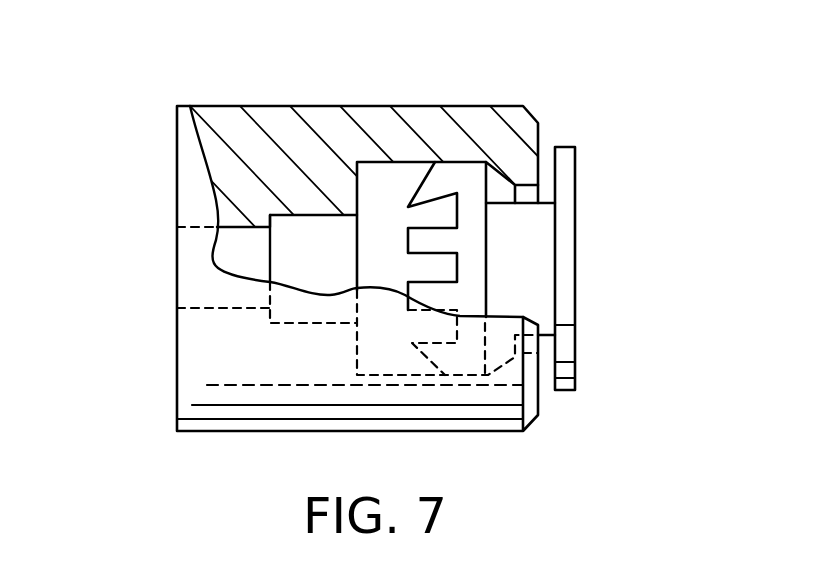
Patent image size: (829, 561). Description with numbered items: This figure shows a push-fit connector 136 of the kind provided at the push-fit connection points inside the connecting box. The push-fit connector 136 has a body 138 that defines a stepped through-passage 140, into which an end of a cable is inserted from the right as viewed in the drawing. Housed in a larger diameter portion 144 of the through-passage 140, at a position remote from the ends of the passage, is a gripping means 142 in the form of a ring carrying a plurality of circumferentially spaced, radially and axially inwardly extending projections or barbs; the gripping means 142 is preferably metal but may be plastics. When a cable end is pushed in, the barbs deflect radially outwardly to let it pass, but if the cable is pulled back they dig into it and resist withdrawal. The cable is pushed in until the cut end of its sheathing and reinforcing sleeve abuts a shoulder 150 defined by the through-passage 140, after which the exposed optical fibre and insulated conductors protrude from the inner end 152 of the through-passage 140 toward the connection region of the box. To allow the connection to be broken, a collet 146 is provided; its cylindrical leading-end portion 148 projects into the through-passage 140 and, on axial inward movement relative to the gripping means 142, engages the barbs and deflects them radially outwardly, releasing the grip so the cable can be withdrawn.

The push-fit connector 136 is at (392, 257).
The body 138 is at (227, 106).
The stepped through-passage 140 is at (237, 247).
The gripping means 142 is at (423, 190).
The larger diameter portion 144 is at (388, 268).
The collet 146 is at (580, 195).
The cylindrical leading-end portion 148 is at (533, 248).
The shoulder 150 is at (357, 245).
The inner end 152 is at (178, 300).